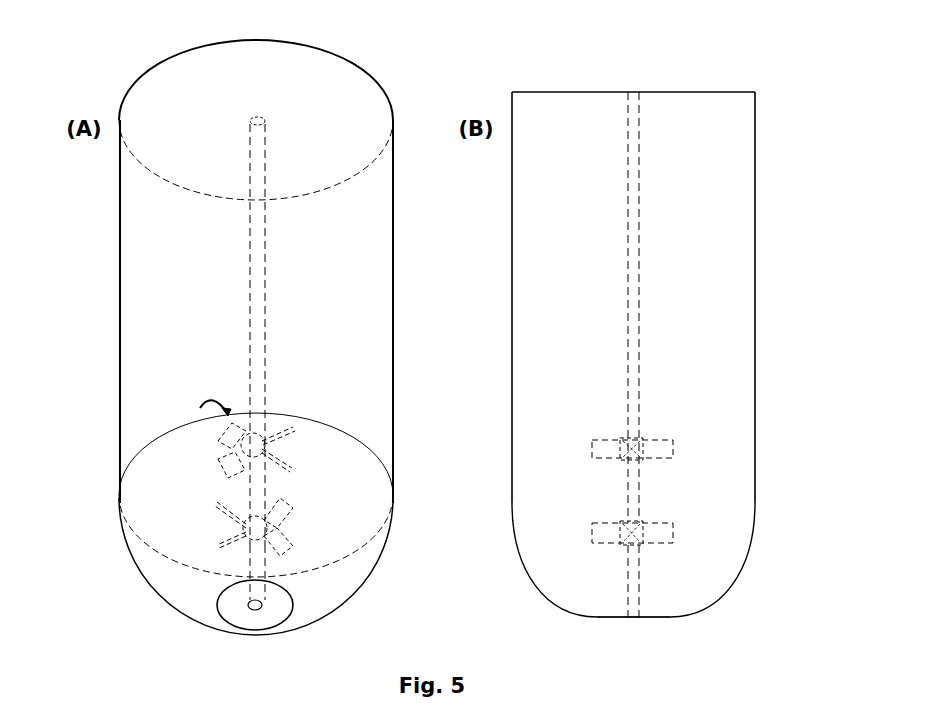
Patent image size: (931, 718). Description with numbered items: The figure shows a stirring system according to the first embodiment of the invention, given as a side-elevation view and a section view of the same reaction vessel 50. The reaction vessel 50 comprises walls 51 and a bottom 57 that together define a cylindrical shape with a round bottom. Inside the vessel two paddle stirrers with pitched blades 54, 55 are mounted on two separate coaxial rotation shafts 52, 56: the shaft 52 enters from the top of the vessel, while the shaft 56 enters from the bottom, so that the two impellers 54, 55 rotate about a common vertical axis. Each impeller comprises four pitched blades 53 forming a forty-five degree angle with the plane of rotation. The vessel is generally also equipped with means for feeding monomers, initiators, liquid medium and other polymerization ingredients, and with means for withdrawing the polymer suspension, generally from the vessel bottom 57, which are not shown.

The reaction vessel 50 is at (460, 337).
The walls 51 is at (417, 297).
The rotation shaft 52 is at (462, 318).
The pitched blades 53 is at (204, 417).
The paddle stirrer with pitched blades 54 is at (458, 527).
The paddle stirrer with pitched blades 55 is at (460, 450).
The rotation shaft 56 is at (460, 581).
The bottom 57 is at (443, 622).